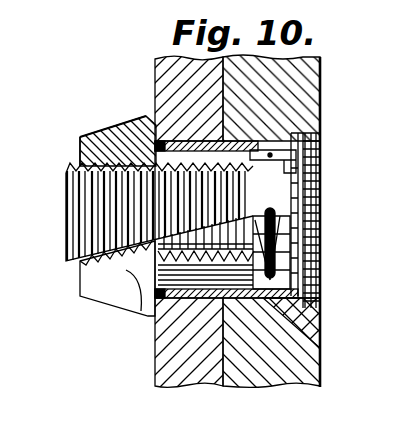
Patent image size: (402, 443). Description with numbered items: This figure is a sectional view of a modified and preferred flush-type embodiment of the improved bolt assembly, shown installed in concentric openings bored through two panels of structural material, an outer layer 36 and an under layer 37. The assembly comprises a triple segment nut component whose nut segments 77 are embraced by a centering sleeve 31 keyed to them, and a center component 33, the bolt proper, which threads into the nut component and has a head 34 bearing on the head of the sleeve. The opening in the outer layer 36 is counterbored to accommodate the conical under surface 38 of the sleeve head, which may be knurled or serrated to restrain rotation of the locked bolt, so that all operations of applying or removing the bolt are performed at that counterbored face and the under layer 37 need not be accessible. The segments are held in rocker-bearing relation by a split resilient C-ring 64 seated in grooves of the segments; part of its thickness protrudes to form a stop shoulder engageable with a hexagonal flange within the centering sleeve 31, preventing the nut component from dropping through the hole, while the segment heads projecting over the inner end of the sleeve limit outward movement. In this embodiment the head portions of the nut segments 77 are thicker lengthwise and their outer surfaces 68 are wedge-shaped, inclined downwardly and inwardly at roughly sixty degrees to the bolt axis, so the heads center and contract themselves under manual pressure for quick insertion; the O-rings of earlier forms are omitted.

The centering sleeve 31 is at (236, 136).
The center component 33 is at (58, 208).
The head 34 is at (310, 247).
The outer layer 36 is at (297, 63).
The under layer 37 is at (152, 58).
The conical under surface 38 is at (300, 313).
The C-ring 64 is at (262, 152).
The outer surfaces 68 is at (103, 118).
The nut segments 77 is at (72, 144).